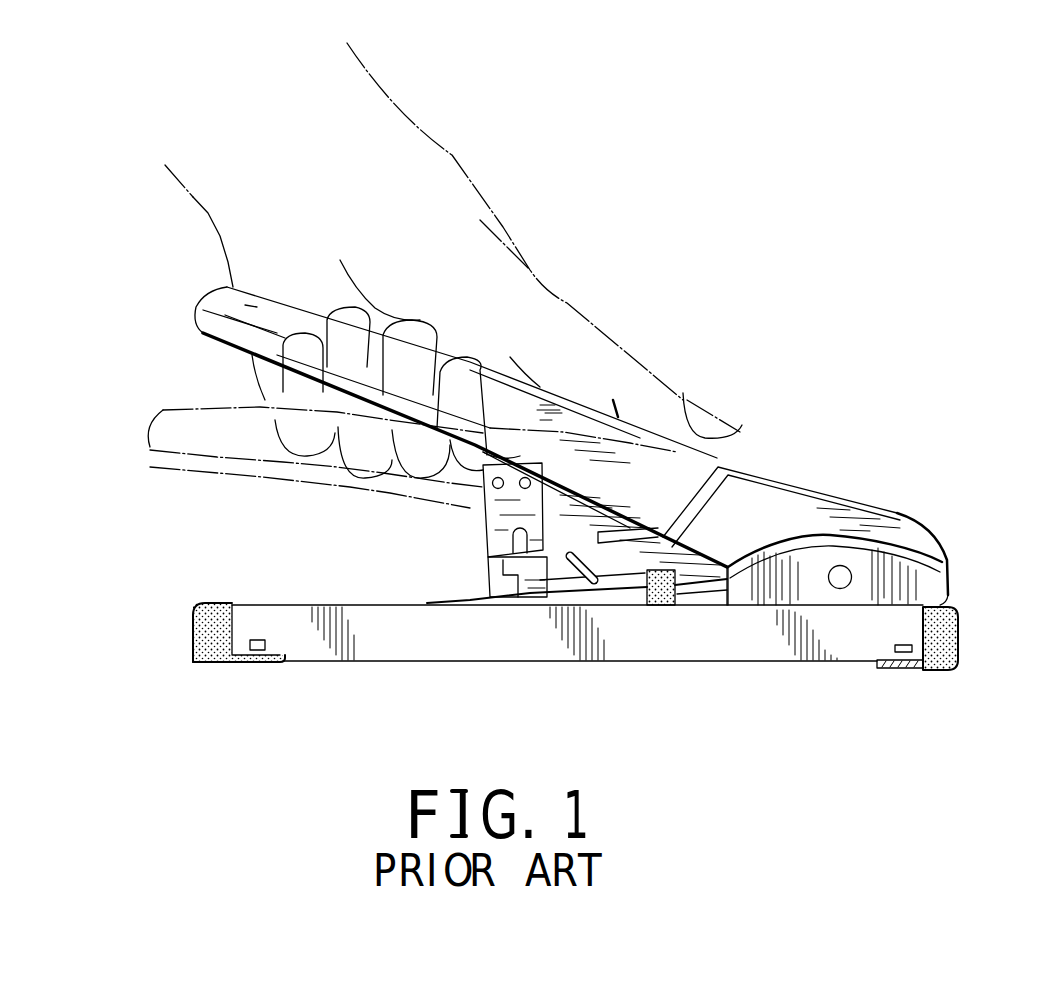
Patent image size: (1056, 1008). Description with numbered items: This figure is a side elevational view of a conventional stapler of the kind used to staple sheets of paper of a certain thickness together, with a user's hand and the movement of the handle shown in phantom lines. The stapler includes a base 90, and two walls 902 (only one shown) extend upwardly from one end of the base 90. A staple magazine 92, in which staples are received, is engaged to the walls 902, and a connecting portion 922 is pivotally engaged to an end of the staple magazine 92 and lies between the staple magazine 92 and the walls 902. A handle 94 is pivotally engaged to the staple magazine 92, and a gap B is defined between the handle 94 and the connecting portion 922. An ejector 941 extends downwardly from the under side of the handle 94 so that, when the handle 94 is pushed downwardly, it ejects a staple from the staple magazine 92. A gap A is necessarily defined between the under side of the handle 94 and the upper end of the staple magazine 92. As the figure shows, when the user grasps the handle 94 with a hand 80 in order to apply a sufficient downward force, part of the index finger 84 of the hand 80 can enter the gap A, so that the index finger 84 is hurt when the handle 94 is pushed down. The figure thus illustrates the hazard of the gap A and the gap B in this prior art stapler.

The hand 80 is at (362, 242).
The index finger 84 is at (462, 455).
The base 90 is at (773, 648).
The wall 902 is at (927, 580).
The staple magazine 92 is at (620, 573).
The connecting portion 922 is at (812, 508).
The handle 94 is at (634, 456).
The ejector 941 is at (483, 462).
The gap A is at (476, 460).
The gap B is at (703, 497).